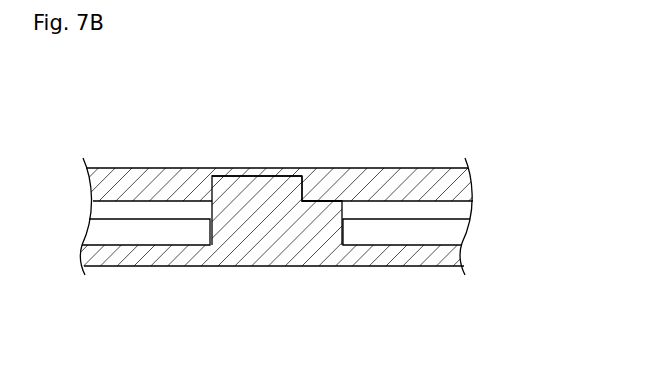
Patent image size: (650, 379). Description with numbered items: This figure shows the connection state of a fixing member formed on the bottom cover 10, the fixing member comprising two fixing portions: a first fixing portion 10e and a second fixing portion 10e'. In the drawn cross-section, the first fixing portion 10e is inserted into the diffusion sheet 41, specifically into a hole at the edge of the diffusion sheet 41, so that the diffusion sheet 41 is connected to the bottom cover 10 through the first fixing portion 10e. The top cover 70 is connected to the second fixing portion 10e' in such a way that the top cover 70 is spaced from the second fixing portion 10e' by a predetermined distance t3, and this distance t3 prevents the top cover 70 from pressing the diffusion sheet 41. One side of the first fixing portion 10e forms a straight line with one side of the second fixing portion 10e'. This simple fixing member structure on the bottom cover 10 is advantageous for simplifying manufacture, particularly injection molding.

The bottom cover 10 is at (280, 253).
The first fixing portion 10e is at (322, 161).
The second fixing portion 10e' is at (257, 149).
The diffusion sheet 41 is at (458, 234).
The top cover 70 is at (462, 185).
The predetermined distance t3 is at (100, 220).